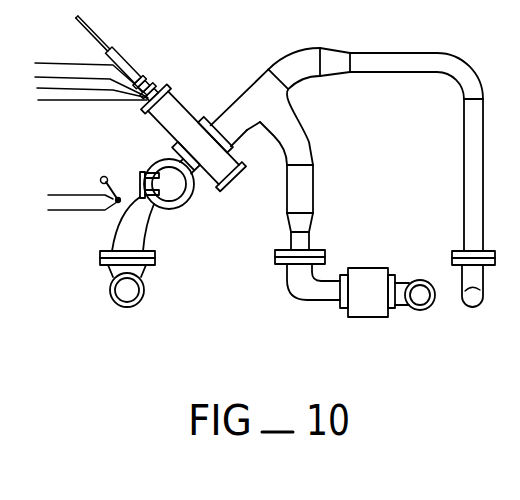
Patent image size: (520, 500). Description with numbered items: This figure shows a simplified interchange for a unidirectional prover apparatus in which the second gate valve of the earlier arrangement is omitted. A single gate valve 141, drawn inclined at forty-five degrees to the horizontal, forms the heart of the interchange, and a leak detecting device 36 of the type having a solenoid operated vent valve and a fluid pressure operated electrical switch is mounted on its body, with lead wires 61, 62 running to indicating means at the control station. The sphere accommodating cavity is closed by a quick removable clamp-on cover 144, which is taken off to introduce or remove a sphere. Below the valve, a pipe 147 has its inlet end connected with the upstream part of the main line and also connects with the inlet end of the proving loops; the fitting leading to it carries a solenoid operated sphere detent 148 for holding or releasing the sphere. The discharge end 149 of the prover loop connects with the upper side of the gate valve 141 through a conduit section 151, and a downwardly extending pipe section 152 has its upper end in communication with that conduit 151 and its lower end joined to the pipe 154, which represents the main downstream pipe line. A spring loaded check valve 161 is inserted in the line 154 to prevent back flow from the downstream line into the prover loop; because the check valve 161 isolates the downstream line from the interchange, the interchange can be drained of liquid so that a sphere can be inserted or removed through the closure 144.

The leak detecting device 36 is at (154, 86).
The lead wire 61 is at (65, 101).
The lead wire 62 is at (67, 64).
The first gate valve 141 is at (181, 118).
The quick removable clamp-on cover 144 is at (179, 214).
The pipe 147 is at (146, 294).
The solenoid operated sphere detent 148 is at (119, 177).
The discharge end of the prover loop 149 is at (478, 55).
The conduit section 151 is at (293, 53).
The downwardly extending pipe section 152 is at (307, 137).
The pipe 154 is at (432, 307).
The check valve 161 is at (377, 267).